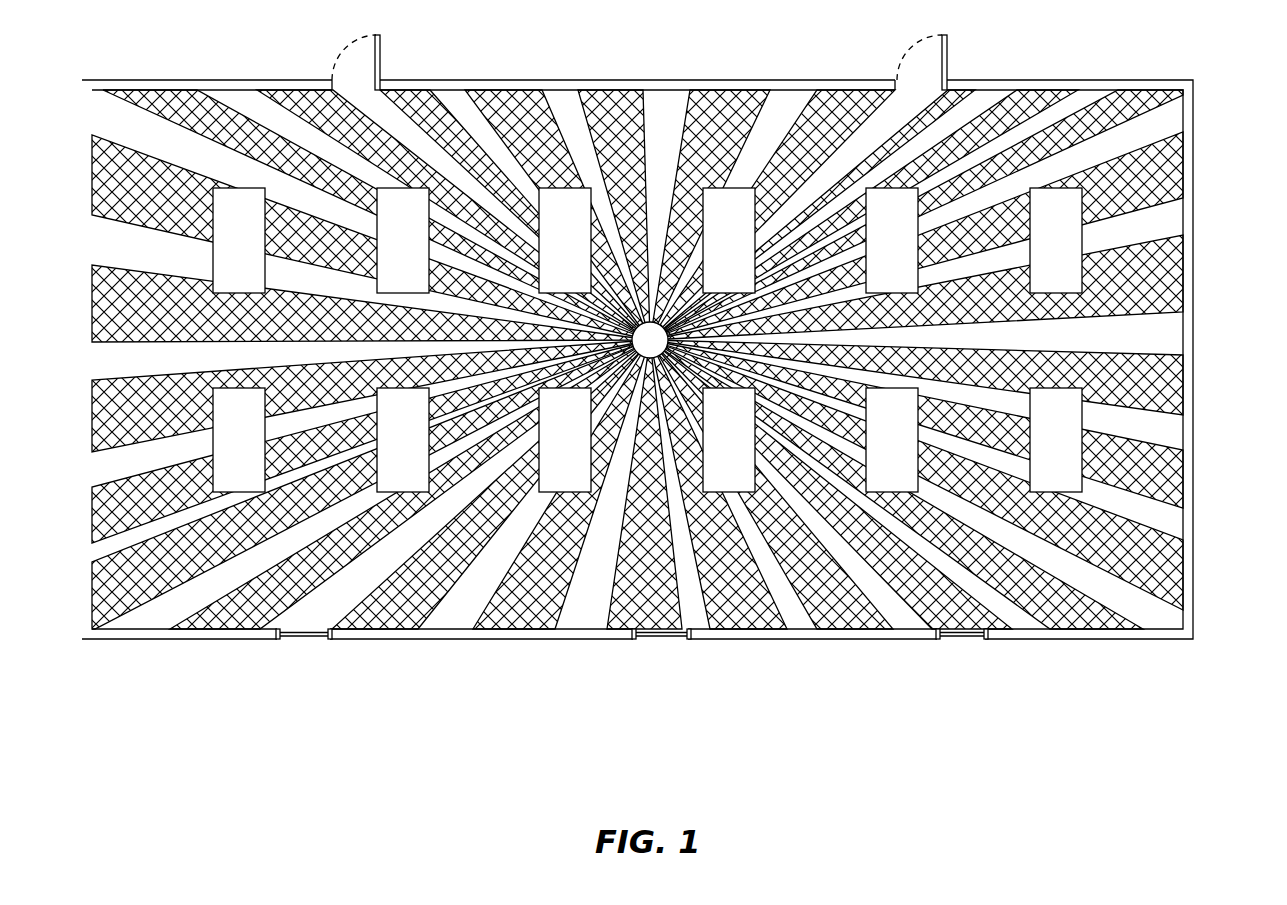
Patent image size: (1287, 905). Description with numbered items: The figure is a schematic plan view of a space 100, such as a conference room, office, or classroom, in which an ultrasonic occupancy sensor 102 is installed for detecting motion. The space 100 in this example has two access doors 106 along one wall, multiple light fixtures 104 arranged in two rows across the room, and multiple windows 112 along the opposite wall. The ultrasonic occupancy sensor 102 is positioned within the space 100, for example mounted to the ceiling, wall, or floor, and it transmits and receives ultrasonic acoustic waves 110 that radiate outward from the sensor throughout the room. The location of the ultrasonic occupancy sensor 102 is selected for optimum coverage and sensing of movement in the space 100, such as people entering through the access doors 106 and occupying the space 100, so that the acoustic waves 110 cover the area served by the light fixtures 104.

The space 100 is at (1195, 108).
The ultrasonic occupancy sensor 102 is at (652, 340).
The light fixtures 104 is at (1077, 452).
The access doors 106 is at (381, 62).
The ultrasonic acoustic waves 110 is at (1160, 270).
The windows 112 is at (300, 640).